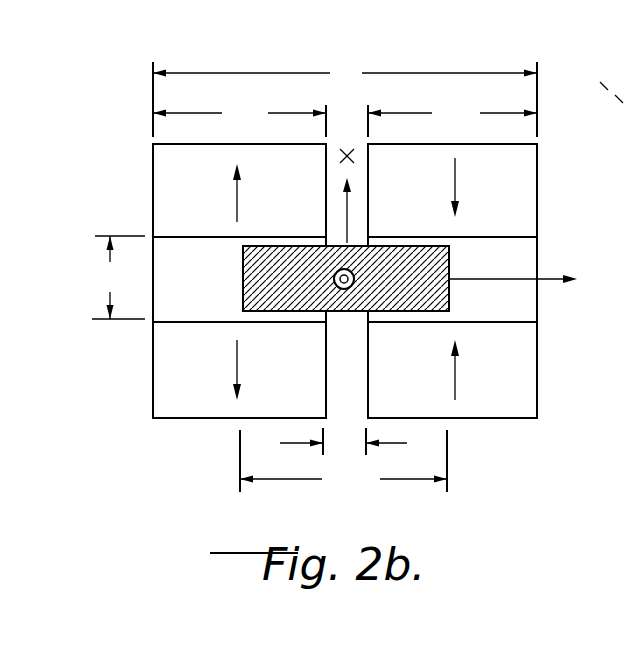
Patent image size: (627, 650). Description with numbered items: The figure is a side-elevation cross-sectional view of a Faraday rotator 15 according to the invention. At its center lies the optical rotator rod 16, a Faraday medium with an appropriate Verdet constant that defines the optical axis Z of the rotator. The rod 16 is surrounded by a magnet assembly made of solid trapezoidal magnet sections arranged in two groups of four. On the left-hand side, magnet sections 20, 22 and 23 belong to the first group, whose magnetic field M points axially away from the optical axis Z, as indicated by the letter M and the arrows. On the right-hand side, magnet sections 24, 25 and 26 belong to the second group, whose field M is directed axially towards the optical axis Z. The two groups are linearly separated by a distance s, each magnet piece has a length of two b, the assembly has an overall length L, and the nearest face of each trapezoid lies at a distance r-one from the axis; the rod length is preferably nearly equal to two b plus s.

The Faraday rotator 15 is at (132, 114).
The optical rotator rod 16 is at (248, 282).
The magnet section 20 is at (153, 170).
The magnet section 22 is at (160, 357).
The magnet section 23 is at (165, 242).
The magnet section 24 is at (525, 200).
The magnet section 25 is at (527, 262).
The magnet section 26 is at (522, 388).